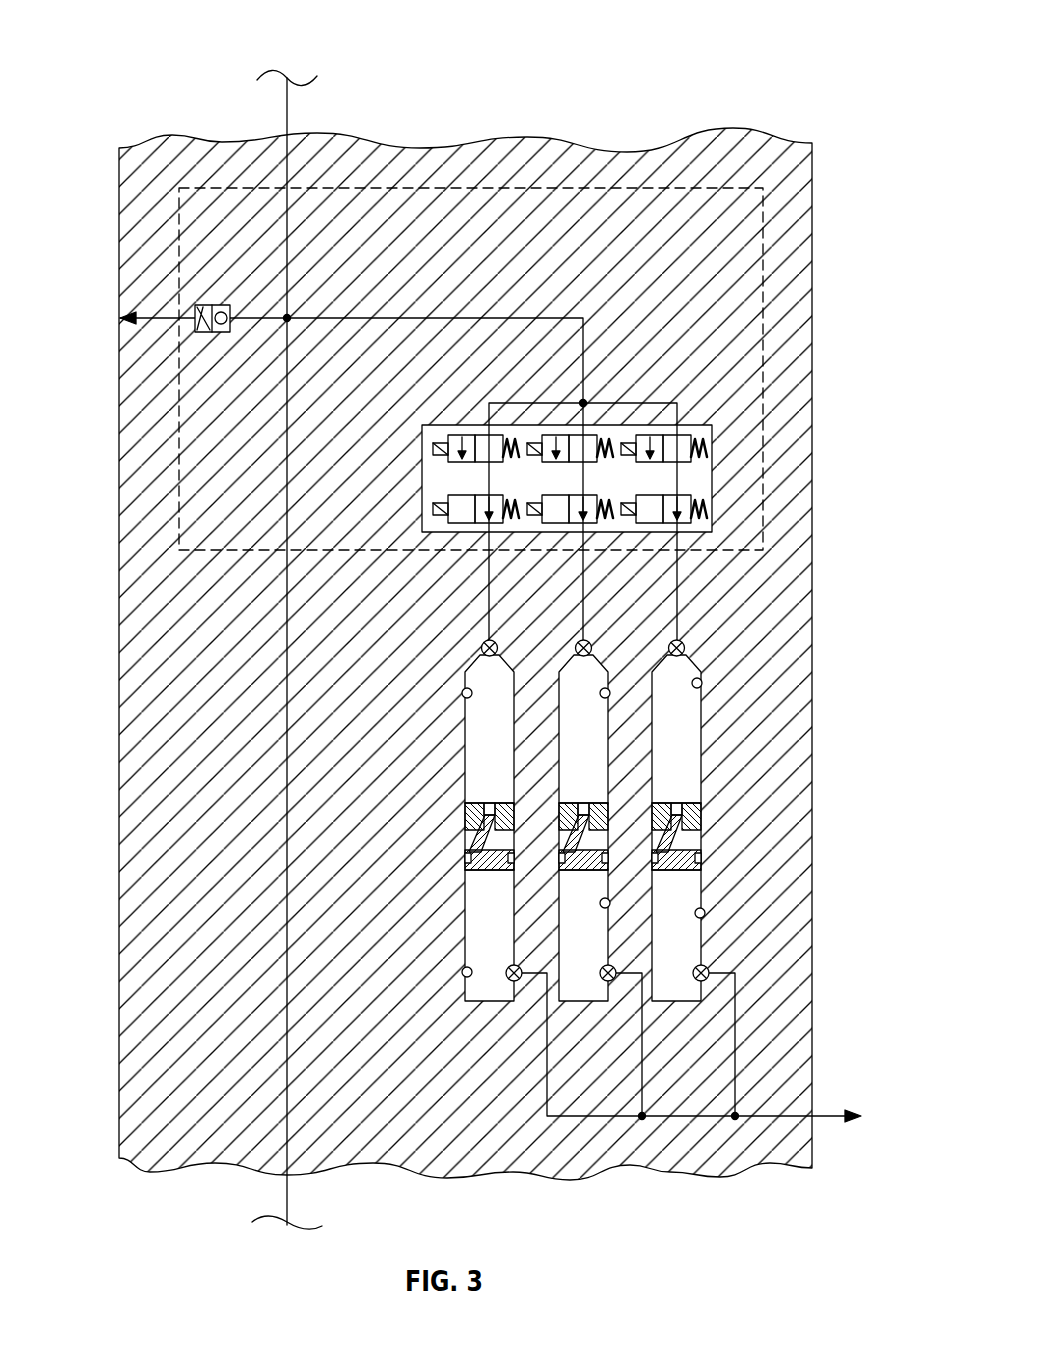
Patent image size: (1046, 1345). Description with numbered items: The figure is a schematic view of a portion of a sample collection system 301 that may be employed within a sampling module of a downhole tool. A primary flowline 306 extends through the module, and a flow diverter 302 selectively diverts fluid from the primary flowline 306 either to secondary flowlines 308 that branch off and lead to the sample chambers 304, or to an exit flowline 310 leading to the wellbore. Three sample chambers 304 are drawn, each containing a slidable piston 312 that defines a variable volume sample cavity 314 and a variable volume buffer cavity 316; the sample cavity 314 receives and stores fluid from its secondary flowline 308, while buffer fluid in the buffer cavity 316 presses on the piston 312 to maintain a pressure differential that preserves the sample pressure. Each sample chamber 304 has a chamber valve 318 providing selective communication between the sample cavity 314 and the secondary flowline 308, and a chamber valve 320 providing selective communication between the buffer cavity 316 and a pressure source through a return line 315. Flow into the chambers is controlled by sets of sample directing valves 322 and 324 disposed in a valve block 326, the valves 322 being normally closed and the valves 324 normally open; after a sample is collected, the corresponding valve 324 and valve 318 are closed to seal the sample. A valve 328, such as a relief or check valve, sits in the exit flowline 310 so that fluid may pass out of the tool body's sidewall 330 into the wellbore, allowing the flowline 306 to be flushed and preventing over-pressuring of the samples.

The hydraulic control system 301 is at (803, 55).
The flow diverter 302 is at (706, 188).
The sample chamber 304 is at (465, 780).
The primary flowline 306 is at (288, 121).
The secondary flowline 308 is at (490, 562).
The exit flowline 310 is at (138, 310).
The slidable piston 312 is at (487, 870).
The sample cavity 314 is at (462, 693).
The return line 315 is at (833, 1042).
The buffer cavity 316 is at (462, 972).
The sample chamber valve 318 is at (497, 645).
The sample chamber valve 320 is at (510, 982).
The sample directing valve 322 is at (735, 445).
The sample directing valve 324 is at (740, 510).
The valve block 326 is at (708, 424).
The valve 328 is at (216, 305).
The tool body sidewall 330 is at (118, 338).